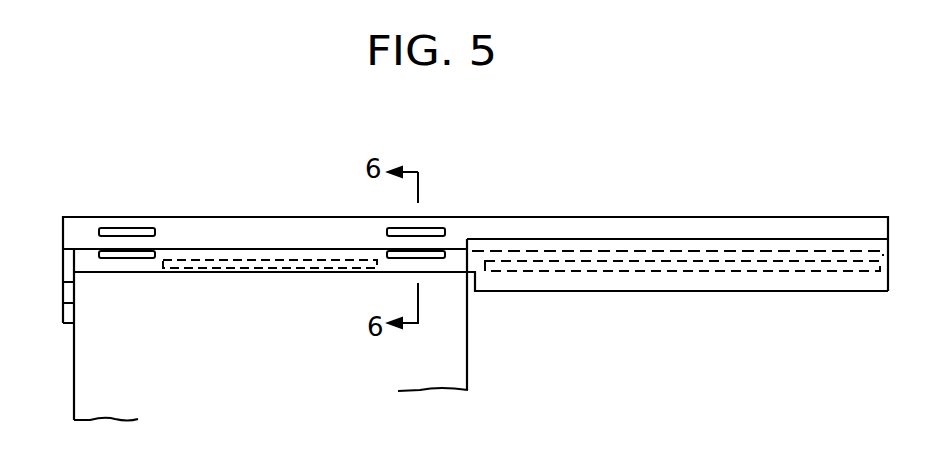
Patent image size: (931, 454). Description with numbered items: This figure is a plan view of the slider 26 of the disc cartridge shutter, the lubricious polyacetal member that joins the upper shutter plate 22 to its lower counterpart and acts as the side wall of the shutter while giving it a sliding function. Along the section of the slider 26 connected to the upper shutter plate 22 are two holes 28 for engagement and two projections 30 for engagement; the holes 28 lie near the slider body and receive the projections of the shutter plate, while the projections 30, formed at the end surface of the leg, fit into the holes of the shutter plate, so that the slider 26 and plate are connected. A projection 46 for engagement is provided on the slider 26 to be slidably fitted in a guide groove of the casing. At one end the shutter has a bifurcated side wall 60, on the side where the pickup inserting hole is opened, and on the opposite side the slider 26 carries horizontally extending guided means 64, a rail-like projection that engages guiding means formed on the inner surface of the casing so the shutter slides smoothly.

The upper shutter plate 22 is at (469, 362).
The slider 26 is at (302, 227).
The hole for engagement 28 is at (141, 229).
The projection for engagement 30 is at (138, 258).
The projection for engagement 46 is at (317, 268).
The bifurcated side wall 60 is at (63, 312).
The guided means 64 is at (715, 270).